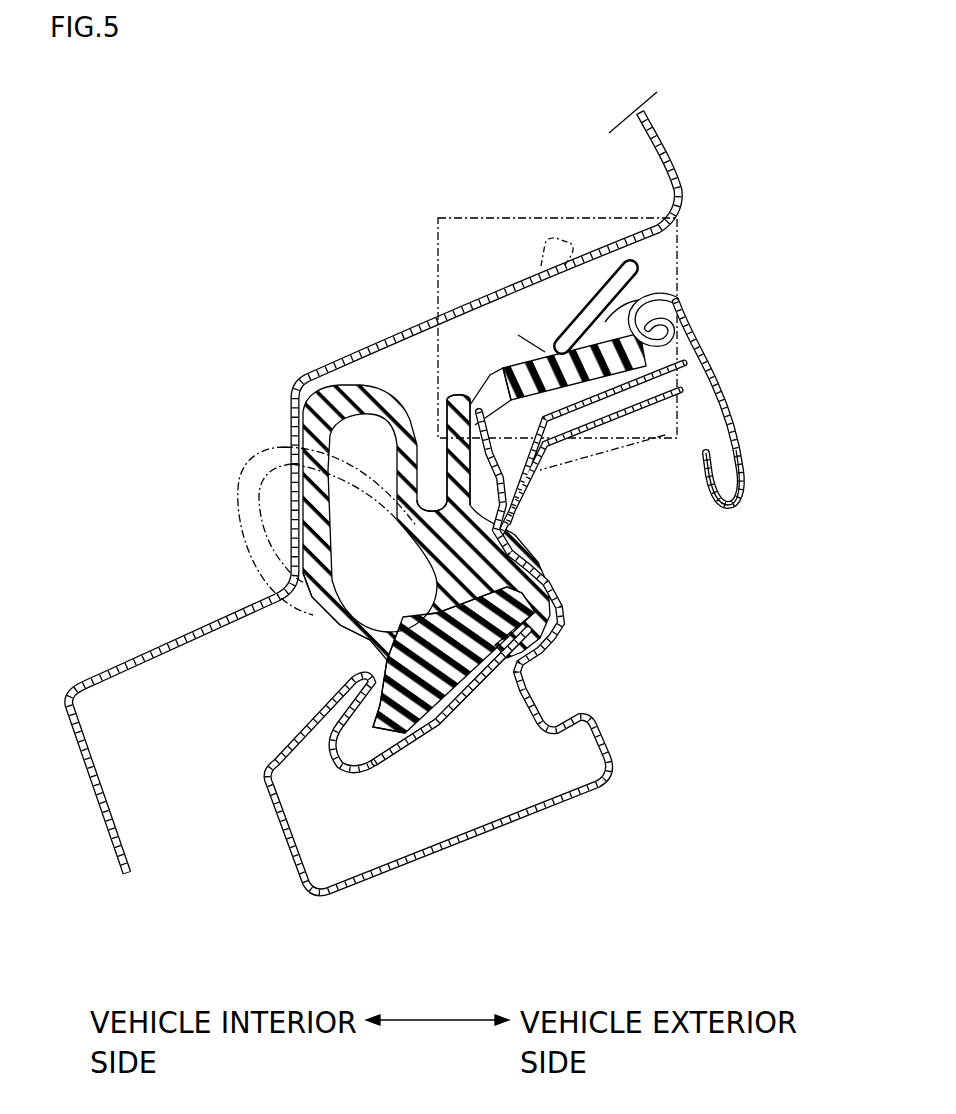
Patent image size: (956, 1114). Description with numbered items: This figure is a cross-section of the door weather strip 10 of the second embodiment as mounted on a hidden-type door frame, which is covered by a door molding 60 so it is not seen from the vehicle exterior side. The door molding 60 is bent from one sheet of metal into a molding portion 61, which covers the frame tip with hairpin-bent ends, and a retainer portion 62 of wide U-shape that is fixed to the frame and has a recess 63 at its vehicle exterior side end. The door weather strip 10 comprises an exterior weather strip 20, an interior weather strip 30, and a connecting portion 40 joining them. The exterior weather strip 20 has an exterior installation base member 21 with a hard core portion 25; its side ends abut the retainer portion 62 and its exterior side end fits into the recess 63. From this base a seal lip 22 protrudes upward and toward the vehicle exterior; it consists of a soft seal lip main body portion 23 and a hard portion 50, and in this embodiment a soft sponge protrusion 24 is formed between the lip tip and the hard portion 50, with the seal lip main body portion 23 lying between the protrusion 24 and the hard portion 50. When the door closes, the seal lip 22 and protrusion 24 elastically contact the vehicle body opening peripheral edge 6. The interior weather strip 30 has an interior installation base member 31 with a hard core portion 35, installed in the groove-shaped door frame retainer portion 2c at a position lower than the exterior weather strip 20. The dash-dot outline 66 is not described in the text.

The door frame retainer portion 2c is at (450, 707).
The vehicle body opening peripheral edge 6 is at (292, 412).
The door weather strip 10 is at (481, 531).
The exterior weather strip 20 is at (598, 256).
The exterior installation base member 21 is at (478, 405).
The seal lip 22 is at (510, 397).
The seal lip main body portion 23 is at (605, 330).
The protrusion 24 is at (563, 308).
The core portion 25 is at (440, 435).
The interior weather strip 30 is at (275, 607).
The interior installation base member 31 is at (397, 723).
The core portion 35 is at (433, 650).
The connecting portion 40 is at (412, 430).
The hard portion 50 is at (532, 308).
The door molding 60 is at (763, 403).
The molding portion 61 is at (746, 443).
The retainer portion 62 is at (623, 387).
The recess 63 is at (660, 338).
The hidden lip position 66 is at (300, 492).